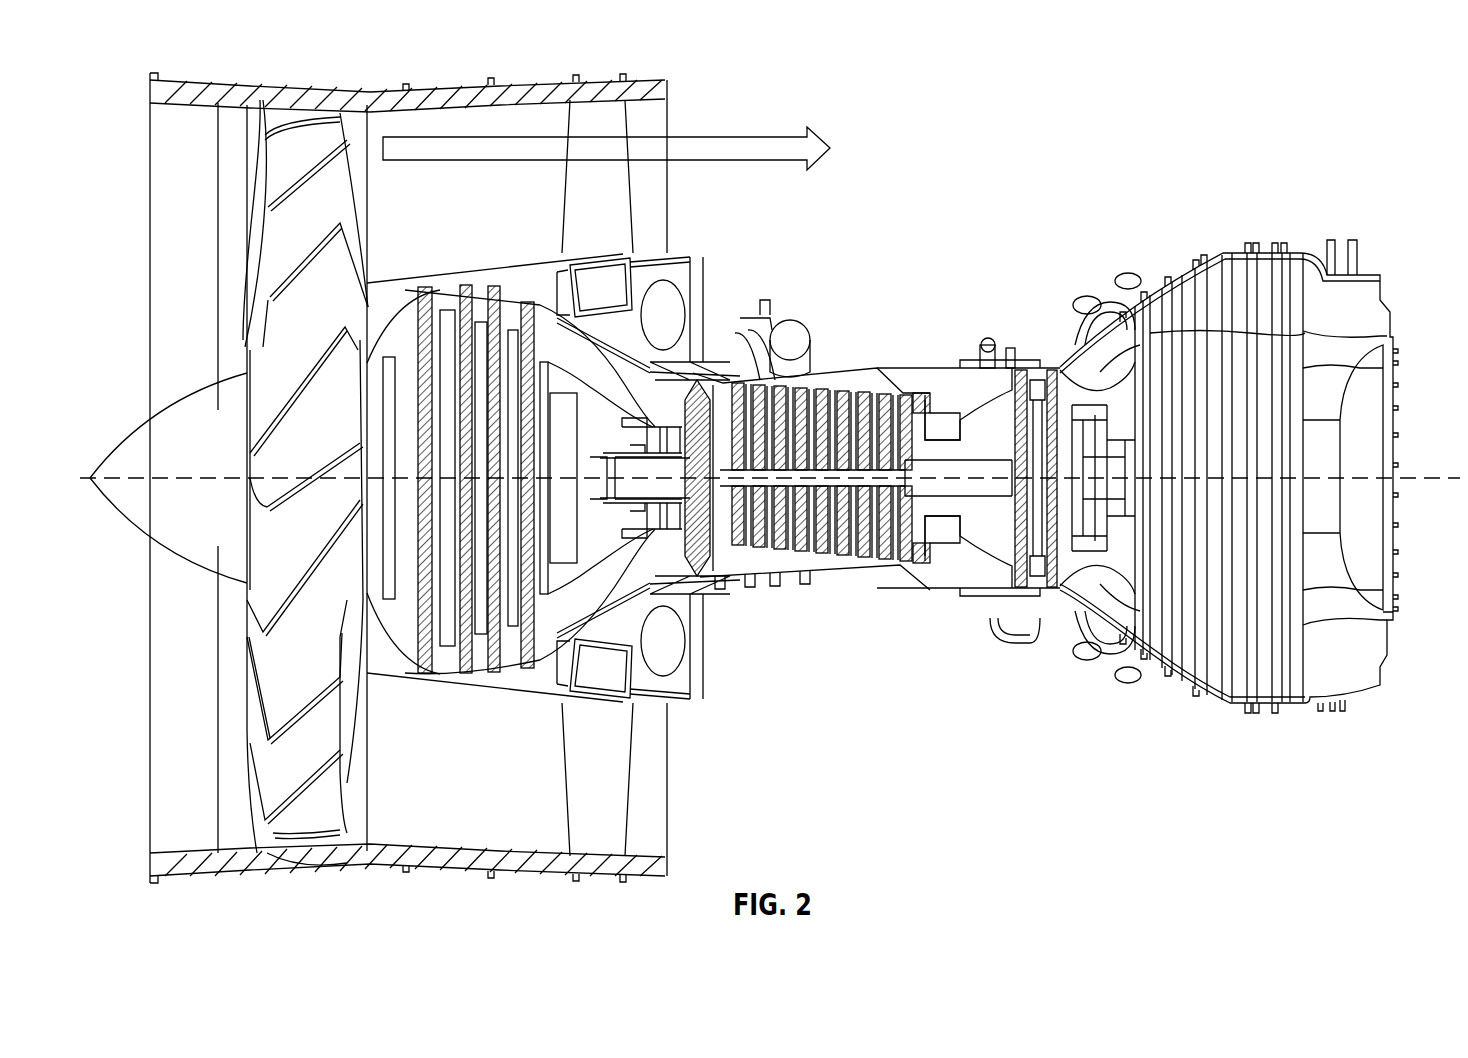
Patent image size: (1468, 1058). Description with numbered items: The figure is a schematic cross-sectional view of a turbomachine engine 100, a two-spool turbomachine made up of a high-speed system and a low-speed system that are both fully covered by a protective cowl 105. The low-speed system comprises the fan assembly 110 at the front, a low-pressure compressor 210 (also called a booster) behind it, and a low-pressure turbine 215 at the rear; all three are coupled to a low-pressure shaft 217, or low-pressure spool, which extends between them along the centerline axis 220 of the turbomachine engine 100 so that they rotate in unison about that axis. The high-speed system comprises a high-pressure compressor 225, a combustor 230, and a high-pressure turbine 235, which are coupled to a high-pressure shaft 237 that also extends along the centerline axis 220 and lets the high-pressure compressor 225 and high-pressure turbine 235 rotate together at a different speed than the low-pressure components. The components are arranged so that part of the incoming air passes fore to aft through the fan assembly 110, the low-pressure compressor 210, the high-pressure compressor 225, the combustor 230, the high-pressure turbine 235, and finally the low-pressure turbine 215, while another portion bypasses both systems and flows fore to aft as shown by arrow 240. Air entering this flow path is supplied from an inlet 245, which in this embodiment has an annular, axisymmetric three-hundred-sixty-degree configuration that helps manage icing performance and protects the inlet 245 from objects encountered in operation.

The turbomachine engine 100 is at (1366, 122).
The protective cowl 105 is at (423, 97).
The fan assembly 110 is at (278, 290).
The low-pressure compressor 210 is at (441, 332).
The low-pressure turbine 215 is at (1268, 267).
The low-pressure shaft 217 is at (657, 468).
The centerline axis 220 is at (1402, 477).
The high-pressure compressor 225 is at (850, 405).
The combustor 230 is at (965, 383).
The high-pressure turbine 235 is at (1032, 560).
The high-pressure shaft 237 is at (953, 493).
The arrow 240 is at (760, 150).
The inlet 245 is at (390, 660).